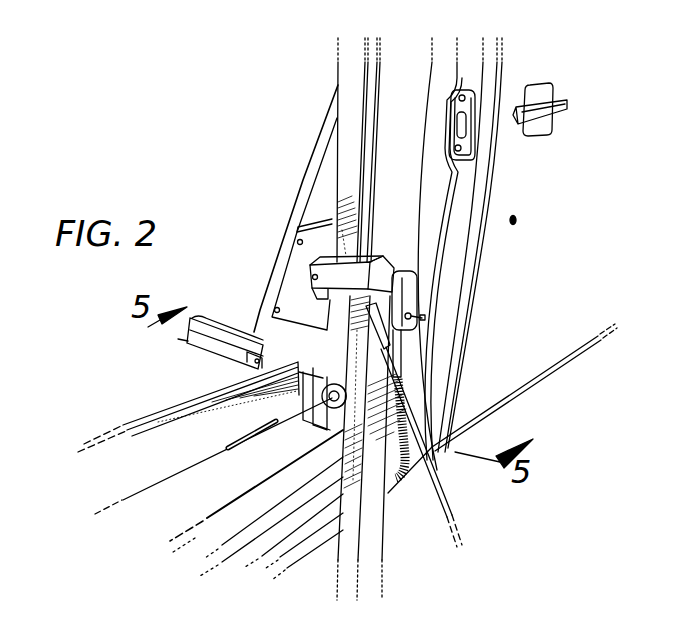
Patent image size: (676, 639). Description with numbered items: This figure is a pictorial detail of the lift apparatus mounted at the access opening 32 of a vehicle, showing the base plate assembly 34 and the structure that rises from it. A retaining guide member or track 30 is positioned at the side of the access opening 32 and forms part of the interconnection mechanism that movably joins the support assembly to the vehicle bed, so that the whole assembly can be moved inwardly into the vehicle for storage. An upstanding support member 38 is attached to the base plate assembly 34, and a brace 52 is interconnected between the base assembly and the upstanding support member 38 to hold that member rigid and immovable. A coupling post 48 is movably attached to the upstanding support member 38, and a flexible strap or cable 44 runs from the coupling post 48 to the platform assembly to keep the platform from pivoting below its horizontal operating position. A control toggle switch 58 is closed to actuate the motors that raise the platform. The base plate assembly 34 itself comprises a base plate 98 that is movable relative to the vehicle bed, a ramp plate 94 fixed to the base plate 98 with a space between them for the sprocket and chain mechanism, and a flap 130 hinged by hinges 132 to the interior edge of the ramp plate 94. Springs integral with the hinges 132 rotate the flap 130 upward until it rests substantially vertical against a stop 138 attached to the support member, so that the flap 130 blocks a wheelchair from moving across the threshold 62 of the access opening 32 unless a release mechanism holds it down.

The retaining guide member or track 30 is at (224, 327).
The access opening 32 is at (472, 181).
The base plate assembly 34 is at (157, 402).
The upstanding support member 38 is at (377, 131).
The flexible strap or cable 44 is at (445, 493).
The coupling post 48 is at (382, 525).
The brace 52 is at (320, 140).
The control toggle switch 58 is at (412, 290).
The threshold 62 is at (298, 537).
The ramp plate 94 is at (213, 456).
The base plate 98 is at (202, 392).
The flap 130 is at (133, 449).
The hinges 132 is at (248, 428).
The stop 138 is at (324, 334).